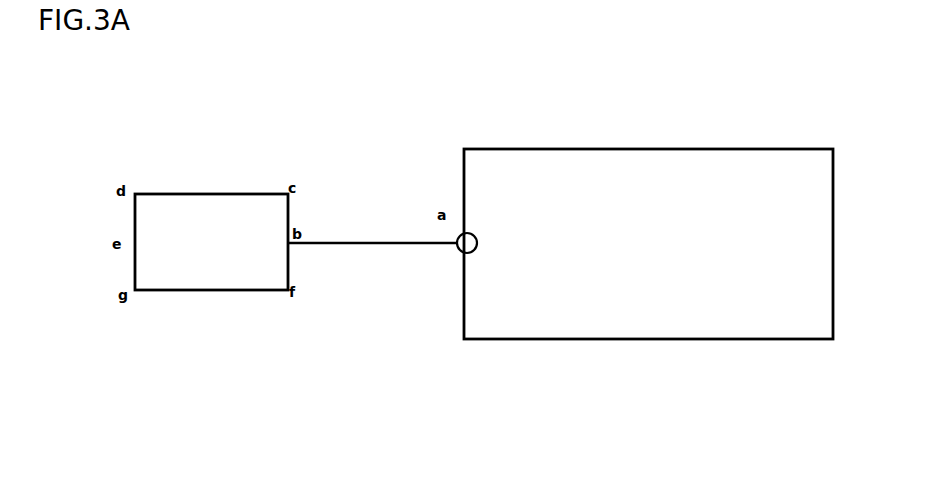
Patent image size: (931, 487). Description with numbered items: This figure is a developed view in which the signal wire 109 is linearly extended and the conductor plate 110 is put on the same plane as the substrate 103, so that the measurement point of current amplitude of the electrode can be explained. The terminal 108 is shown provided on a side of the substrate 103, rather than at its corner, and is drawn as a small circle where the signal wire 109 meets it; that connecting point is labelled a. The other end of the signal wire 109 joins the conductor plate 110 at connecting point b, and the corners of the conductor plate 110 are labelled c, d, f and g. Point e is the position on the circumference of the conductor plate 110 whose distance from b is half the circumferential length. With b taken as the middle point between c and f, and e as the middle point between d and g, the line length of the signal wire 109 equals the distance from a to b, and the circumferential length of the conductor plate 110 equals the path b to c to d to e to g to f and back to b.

The substrate 103 is at (552, 149).
The terminal 108 is at (462, 254).
The signal wire 109 is at (340, 240).
The conductor plate 110 is at (240, 194).